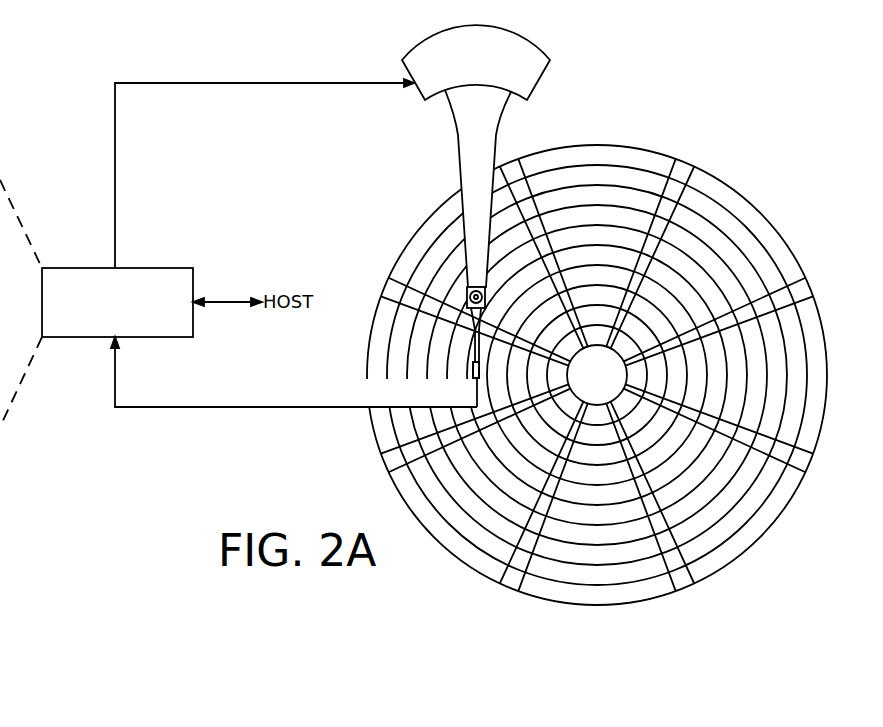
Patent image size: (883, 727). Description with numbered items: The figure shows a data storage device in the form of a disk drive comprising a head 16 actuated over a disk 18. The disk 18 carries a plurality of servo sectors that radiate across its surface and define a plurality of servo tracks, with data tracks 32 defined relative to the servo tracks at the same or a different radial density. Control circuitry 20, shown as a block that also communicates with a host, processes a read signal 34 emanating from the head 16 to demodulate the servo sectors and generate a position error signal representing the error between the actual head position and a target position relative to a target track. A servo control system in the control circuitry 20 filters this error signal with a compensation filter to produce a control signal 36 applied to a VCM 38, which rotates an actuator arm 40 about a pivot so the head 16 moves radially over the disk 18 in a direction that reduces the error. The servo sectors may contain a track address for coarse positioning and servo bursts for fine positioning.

The head 16 is at (462, 383).
The disk 18 is at (755, 196).
The control circuitry 20 is at (57, 342).
The data tracks 32 is at (588, 172).
The read signal 34 is at (258, 409).
The control signal 36 is at (117, 152).
The VCM 38 is at (414, 90).
The actuator arm 40 is at (461, 160).